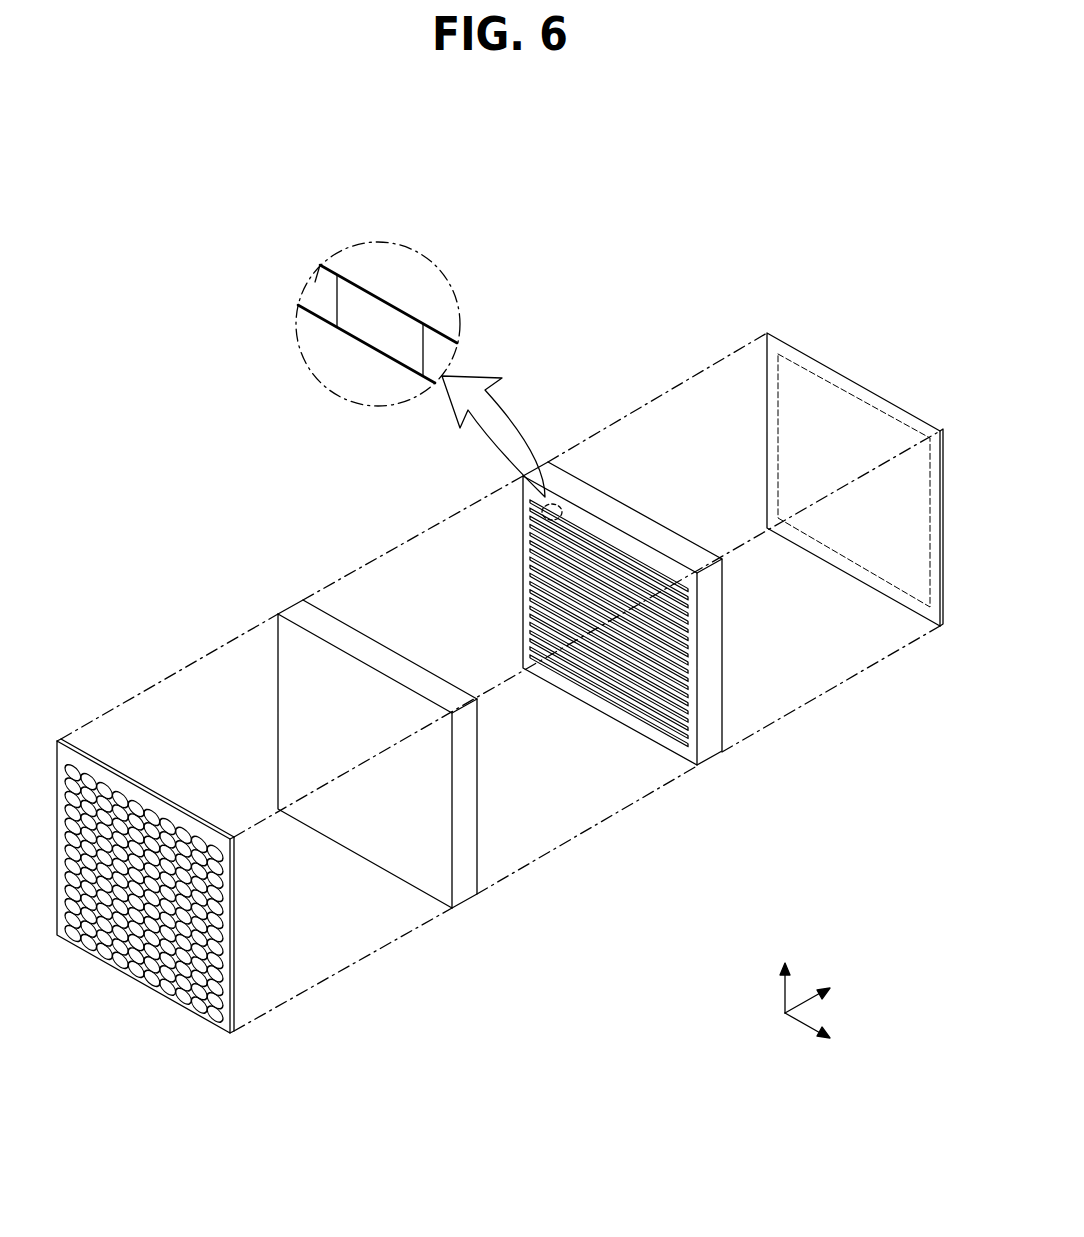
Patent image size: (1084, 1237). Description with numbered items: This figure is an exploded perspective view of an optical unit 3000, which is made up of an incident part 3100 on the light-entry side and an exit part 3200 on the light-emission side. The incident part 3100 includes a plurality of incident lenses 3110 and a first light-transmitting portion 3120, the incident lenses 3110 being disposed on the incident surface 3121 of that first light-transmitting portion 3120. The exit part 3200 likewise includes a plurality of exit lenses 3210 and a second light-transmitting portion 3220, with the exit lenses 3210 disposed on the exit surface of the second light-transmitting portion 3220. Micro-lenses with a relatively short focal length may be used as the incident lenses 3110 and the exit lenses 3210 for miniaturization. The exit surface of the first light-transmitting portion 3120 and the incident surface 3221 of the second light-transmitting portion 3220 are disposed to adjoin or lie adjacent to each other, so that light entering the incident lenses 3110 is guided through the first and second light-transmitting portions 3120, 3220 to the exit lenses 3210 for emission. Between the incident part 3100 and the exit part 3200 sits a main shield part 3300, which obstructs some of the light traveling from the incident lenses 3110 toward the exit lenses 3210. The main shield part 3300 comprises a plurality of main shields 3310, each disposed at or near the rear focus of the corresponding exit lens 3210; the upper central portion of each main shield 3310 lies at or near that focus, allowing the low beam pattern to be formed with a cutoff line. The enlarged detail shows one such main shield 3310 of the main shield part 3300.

The optical unit 3000 is at (185, 322).
The incident part 3100 is at (267, 784).
The incident lenses 3110 is at (62, 740).
The first light-transmitting portion 3120 is at (285, 607).
The incident surface 3121 is at (402, 860).
The exit part 3200 is at (733, 521).
The exit lenses 3210 is at (803, 358).
The second light-transmitting portion 3220 is at (571, 482).
The incident surface 3221 is at (647, 723).
The main shield part 3300 is at (423, 294).
The main shields 3310 is at (377, 313).